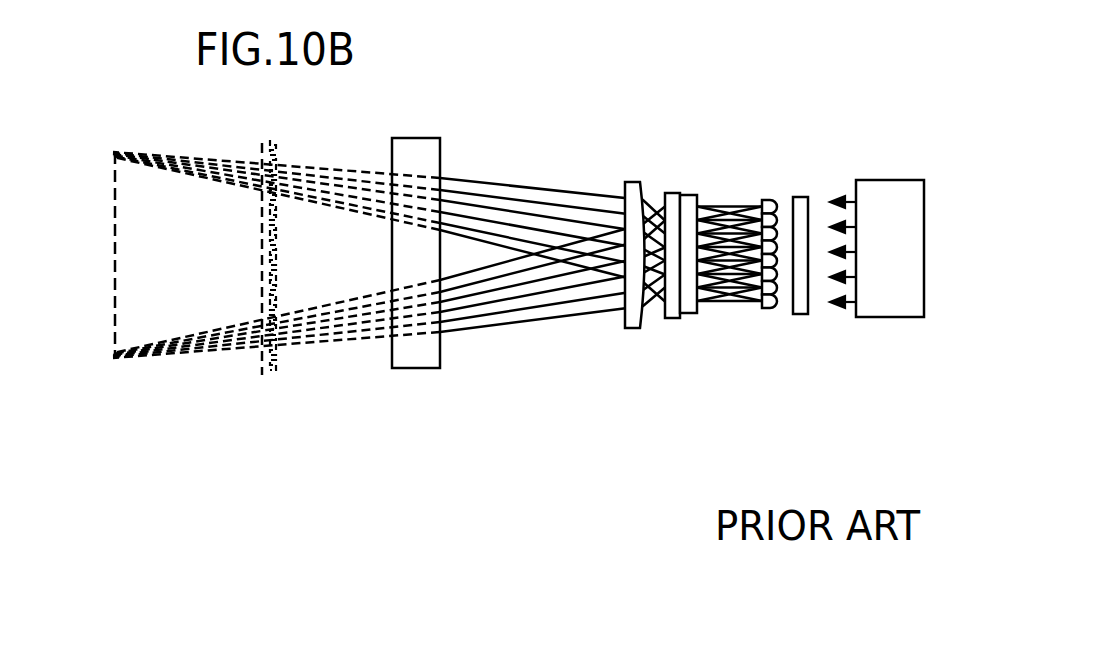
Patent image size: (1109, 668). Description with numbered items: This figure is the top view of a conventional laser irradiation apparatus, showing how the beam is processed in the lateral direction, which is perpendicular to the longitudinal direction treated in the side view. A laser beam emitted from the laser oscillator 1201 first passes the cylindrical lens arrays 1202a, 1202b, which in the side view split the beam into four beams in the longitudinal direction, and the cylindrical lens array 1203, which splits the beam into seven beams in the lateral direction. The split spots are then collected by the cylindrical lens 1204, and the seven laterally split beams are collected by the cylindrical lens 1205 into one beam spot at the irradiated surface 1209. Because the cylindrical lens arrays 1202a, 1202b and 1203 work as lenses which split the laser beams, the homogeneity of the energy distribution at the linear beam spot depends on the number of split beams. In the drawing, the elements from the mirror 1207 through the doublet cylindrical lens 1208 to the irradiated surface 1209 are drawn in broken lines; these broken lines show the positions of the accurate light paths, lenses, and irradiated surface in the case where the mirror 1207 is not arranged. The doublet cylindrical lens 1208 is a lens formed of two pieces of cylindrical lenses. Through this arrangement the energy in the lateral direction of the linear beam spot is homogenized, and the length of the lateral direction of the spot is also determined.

The laser oscillator 1201 is at (858, 318).
The cylindrical lens array 1202a is at (801, 197).
The cylindrical lens array 1202b is at (687, 193).
The cylindrical lens array 1203 is at (763, 308).
The cylindrical lens 1204 is at (670, 193).
The cylindrical lens 1205 is at (623, 330).
The mirror 1207 is at (407, 368).
The doublet cylindrical lens 1208 is at (280, 357).
The irradiated surface 1209 is at (115, 238).